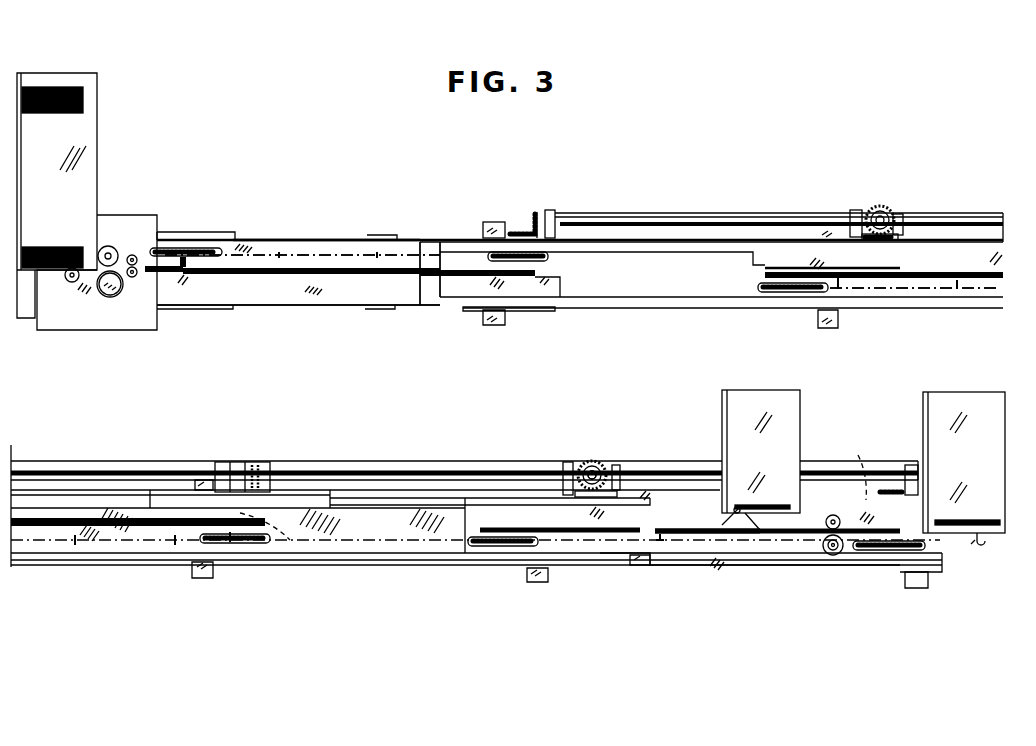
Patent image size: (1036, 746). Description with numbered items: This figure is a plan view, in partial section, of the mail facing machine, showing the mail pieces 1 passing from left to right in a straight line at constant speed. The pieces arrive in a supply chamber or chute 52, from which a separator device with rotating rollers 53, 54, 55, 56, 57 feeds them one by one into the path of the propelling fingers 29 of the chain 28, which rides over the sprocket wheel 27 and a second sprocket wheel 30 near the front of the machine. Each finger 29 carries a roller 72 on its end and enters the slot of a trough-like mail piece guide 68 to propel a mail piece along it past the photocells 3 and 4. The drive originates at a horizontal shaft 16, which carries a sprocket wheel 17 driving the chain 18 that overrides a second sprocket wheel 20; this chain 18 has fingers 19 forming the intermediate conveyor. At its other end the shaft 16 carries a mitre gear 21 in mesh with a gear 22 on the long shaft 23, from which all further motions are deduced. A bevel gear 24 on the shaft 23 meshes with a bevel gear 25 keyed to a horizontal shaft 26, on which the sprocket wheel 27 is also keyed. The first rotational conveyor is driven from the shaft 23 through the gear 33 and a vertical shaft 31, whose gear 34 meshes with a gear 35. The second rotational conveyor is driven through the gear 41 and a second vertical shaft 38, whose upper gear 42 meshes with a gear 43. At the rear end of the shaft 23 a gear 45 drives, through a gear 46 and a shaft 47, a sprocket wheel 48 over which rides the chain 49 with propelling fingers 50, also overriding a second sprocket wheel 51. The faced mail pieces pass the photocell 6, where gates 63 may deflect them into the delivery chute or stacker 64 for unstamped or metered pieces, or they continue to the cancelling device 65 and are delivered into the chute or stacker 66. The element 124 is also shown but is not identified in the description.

The mail pieces 1 is at (57, 88).
The supply chamber or chute 52 is at (100, 83).
The rotating roller 55 is at (110, 246).
The rotating roller 56 is at (132, 255).
The rotating roller 57 is at (132, 278).
The rotating roller 54 is at (108, 297).
The rotating roller 53 is at (72, 283).
The second sprocket wheel 30 is at (200, 248).
The roller 72 is at (279, 254).
The propelling fingers 29 is at (283, 254).
The chain 28 is at (342, 250).
The trough-like mail piece guide 68 is at (278, 280).
The photocell 3 is at (413, 298).
The photocell 4 is at (440, 250).
The horizontal shaft 26 is at (494, 225).
The bevel gear 25 is at (523, 232).
The bevel gear 24 is at (550, 212).
The sprocket wheel 27 is at (548, 258).
The shaft 23 is at (700, 222).
The gear 34 is at (880, 210).
The gear 33 is at (866, 212).
The vertical shaft 31 is at (890, 215).
The gear 35 is at (895, 235).
The second sprocket wheel 20 is at (760, 292).
The chain 18 is at (897, 298).
The fingers 19 is at (960, 300).
The bar 124 is at (987, 280).
The mitre gear 21 is at (237, 478).
The gear 22 is at (255, 468).
The sprocket wheel 17 is at (265, 545).
The horizontal shaft 16 is at (277, 533).
The second sprocket wheel 51 is at (478, 546).
The second vertical shaft 38 is at (596, 472).
The gear 42 is at (591, 466).
The gear 41 is at (568, 464).
The gear 43 is at (615, 492).
The photocell 6 is at (628, 552).
The propelling fingers 50 is at (660, 541).
The chain 49 is at (705, 548).
The delivery chute or stacker 64 is at (776, 395).
The chute or stacker 66 is at (972, 395).
The gates 63 is at (733, 508).
The cancelling device 65 is at (825, 552).
The sprocket wheel 48 is at (925, 548).
The gear 46 is at (890, 490).
The gear 45 is at (910, 465).
The shaft 47 is at (856, 466).